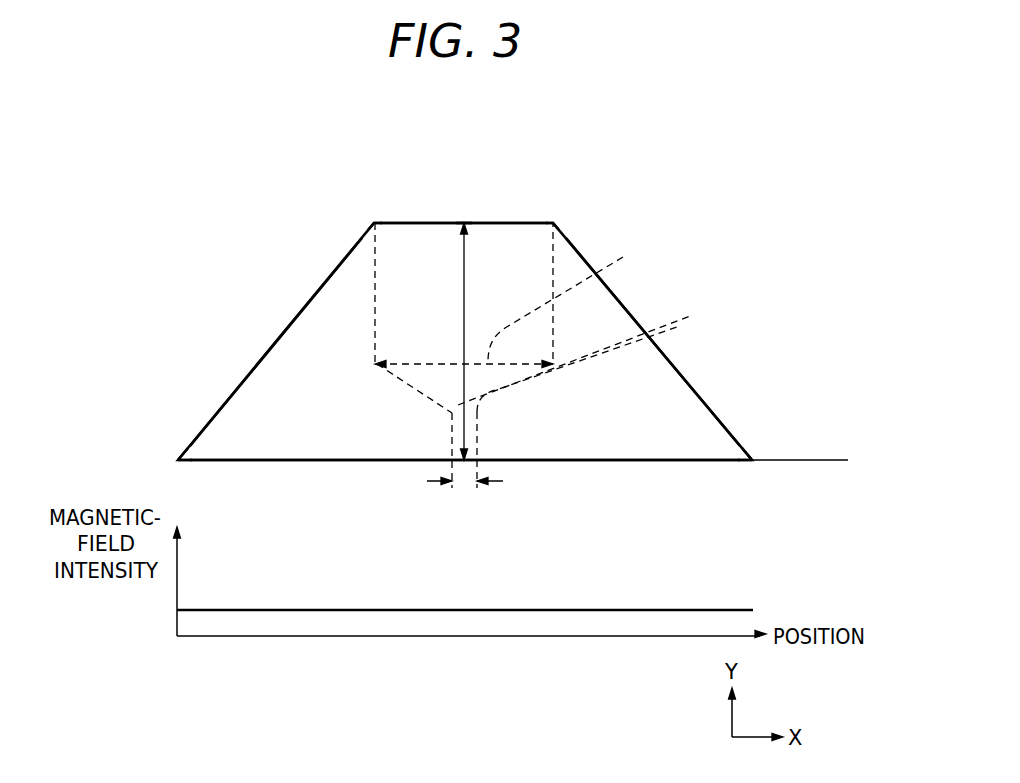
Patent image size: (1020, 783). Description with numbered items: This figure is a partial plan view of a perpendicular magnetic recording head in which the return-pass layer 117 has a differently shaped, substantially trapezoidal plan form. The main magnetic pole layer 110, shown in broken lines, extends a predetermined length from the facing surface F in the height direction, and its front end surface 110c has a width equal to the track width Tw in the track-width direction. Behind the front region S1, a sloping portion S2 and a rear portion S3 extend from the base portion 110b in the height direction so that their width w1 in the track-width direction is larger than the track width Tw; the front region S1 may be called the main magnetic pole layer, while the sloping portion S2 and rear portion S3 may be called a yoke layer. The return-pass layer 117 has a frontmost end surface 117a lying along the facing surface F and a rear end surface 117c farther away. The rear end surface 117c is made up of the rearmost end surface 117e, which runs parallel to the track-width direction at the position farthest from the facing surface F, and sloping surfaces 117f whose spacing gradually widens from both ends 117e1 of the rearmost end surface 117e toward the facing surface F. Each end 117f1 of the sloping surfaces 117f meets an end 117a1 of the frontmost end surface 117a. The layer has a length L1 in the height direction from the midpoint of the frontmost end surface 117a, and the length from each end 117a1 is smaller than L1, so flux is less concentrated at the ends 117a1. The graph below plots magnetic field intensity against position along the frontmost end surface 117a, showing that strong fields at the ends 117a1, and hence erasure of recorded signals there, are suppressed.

The return-pass layer 117 is at (694, 418).
The rearmost end surface 117e is at (398, 222).
The ends of the rearmost end surface 117e1 is at (374, 222).
The sloping surfaces 117f is at (307, 305).
The ends of the sloping surfaces 117f1 is at (177, 458).
The frontmost end surface 117a is at (612, 462).
The ends of the frontmost end surface 117a1 is at (176, 461).
The rear end surface 117c is at (463, 197).
The main magnetic pole layer 110 is at (526, 240).
The base portion 110b is at (672, 328).
The front end surface 110c is at (462, 462).
The length in the height direction L1 is at (464, 284).
The track width Tw is at (470, 483).
The width in the track-width direction w1 is at (568, 293).
The front region S1 is at (476, 436).
The sloping portion S2 is at (458, 405).
The rear portion S3 is at (534, 256).
The facing surface F is at (808, 461).